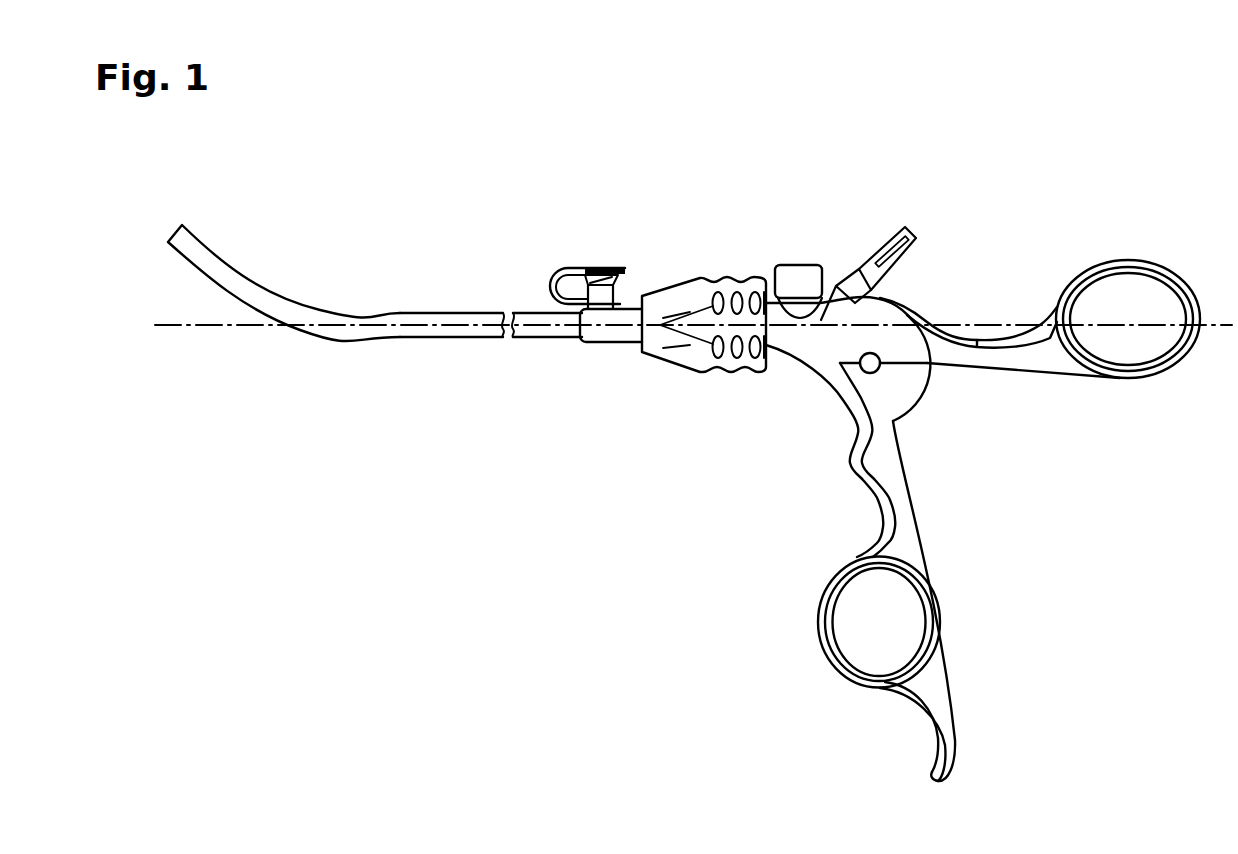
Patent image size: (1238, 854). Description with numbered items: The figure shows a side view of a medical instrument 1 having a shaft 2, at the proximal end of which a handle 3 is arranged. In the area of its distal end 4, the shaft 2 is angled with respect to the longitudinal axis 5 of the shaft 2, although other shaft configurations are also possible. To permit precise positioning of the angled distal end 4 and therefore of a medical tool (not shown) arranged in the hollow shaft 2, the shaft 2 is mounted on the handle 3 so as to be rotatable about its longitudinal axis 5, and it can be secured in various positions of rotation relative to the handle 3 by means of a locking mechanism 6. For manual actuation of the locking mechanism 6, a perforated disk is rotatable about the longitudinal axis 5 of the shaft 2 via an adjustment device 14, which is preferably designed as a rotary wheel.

The medical instrument 1 is at (720, 573).
The shaft 2 is at (452, 314).
The handle 3 is at (947, 488).
The distal end 4 is at (210, 248).
The longitudinal axis 5 is at (187, 327).
The locking mechanism 6 is at (718, 255).
The adjustment device 14 is at (670, 364).